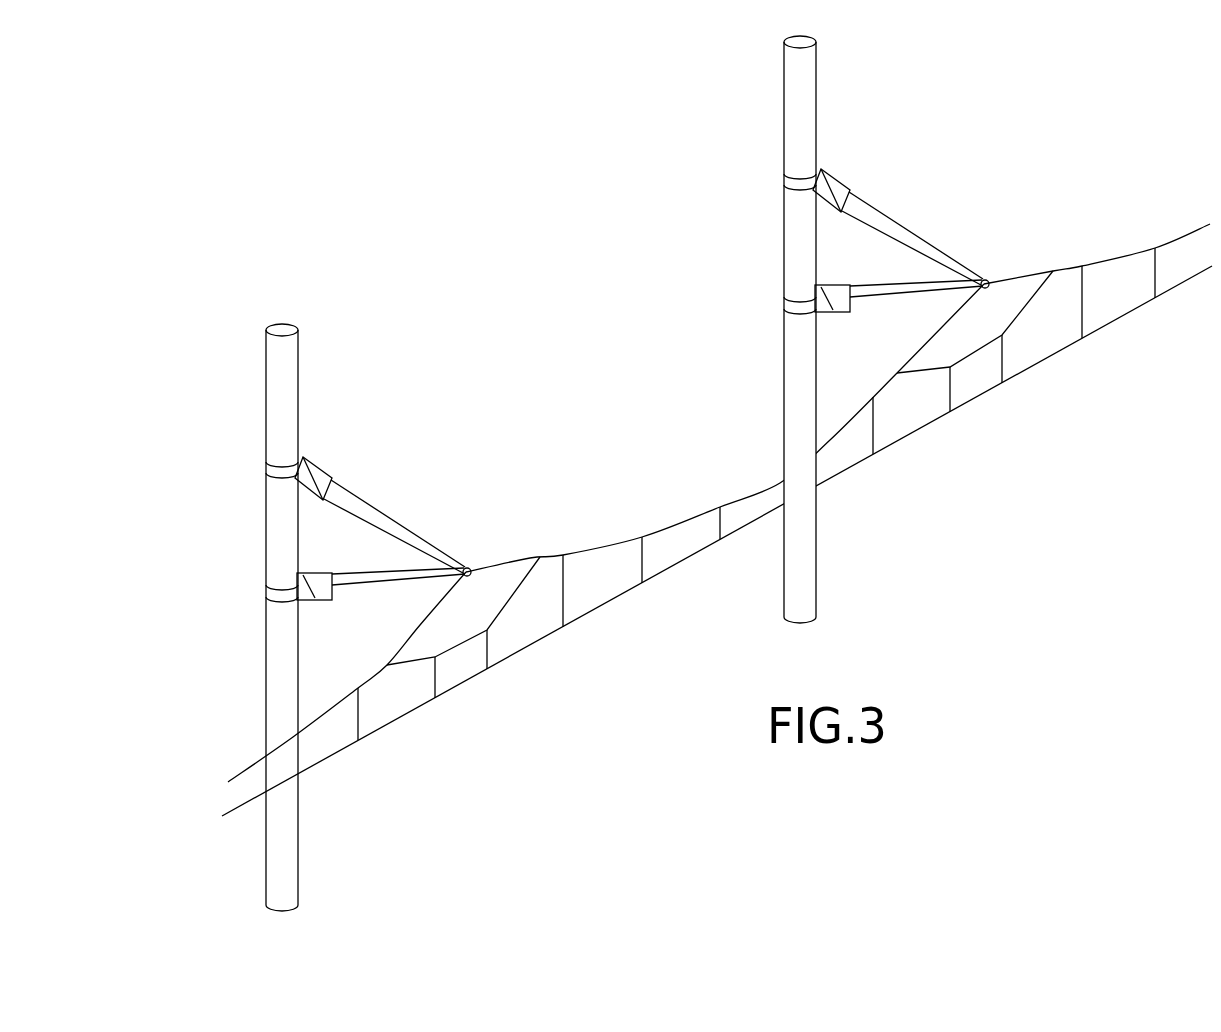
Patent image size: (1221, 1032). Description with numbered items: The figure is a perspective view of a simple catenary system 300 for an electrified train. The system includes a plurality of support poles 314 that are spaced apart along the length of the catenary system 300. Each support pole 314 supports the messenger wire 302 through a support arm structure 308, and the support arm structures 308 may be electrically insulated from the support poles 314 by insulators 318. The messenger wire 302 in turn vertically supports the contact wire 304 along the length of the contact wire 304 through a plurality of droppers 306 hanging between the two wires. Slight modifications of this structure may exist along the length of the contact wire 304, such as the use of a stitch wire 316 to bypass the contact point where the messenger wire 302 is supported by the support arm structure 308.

The simple catenary system 300 is at (717, 473).
The messenger wire 302 is at (678, 521).
The contact wire 304 is at (673, 565).
The droppers 306 is at (875, 428).
The support arm structures 308 is at (901, 204).
The support poles 314 is at (806, 93).
The stitch wire 316 is at (1030, 315).
The insulators 318 is at (832, 315).